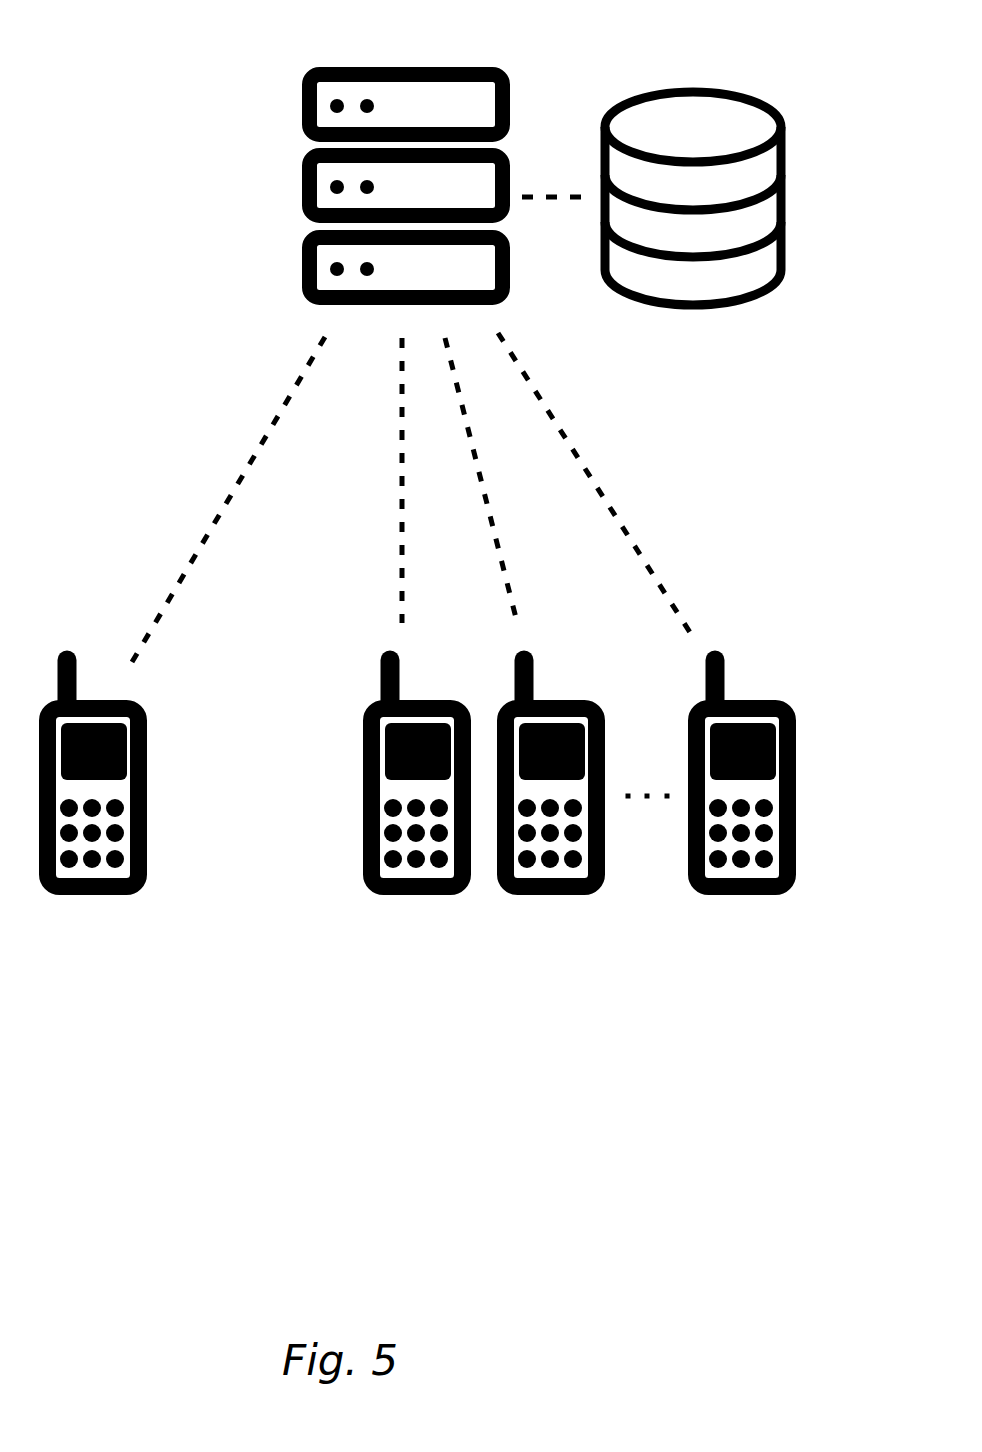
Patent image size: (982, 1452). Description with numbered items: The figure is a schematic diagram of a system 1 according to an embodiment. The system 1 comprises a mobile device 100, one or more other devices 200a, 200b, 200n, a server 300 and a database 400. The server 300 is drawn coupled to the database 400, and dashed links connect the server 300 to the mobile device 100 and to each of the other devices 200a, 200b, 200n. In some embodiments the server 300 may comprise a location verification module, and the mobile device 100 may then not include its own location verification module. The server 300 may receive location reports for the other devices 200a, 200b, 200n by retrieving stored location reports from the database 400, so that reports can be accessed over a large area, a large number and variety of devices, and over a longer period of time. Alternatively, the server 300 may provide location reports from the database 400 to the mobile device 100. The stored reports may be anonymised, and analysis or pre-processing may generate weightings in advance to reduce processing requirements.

The system 1 is at (146, 261).
The mobile device 100 is at (140, 905).
The other device 200a is at (417, 908).
The other device 200b is at (550, 905).
The other devices 200n is at (742, 905).
The server 300 is at (508, 75).
The database 400 is at (757, 95).